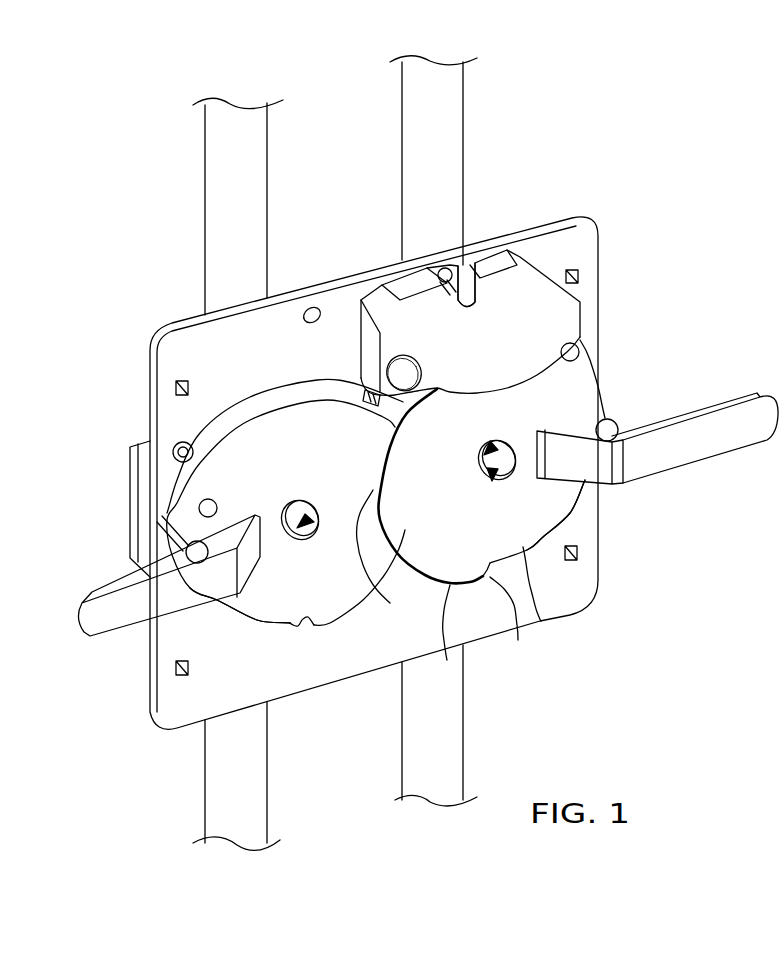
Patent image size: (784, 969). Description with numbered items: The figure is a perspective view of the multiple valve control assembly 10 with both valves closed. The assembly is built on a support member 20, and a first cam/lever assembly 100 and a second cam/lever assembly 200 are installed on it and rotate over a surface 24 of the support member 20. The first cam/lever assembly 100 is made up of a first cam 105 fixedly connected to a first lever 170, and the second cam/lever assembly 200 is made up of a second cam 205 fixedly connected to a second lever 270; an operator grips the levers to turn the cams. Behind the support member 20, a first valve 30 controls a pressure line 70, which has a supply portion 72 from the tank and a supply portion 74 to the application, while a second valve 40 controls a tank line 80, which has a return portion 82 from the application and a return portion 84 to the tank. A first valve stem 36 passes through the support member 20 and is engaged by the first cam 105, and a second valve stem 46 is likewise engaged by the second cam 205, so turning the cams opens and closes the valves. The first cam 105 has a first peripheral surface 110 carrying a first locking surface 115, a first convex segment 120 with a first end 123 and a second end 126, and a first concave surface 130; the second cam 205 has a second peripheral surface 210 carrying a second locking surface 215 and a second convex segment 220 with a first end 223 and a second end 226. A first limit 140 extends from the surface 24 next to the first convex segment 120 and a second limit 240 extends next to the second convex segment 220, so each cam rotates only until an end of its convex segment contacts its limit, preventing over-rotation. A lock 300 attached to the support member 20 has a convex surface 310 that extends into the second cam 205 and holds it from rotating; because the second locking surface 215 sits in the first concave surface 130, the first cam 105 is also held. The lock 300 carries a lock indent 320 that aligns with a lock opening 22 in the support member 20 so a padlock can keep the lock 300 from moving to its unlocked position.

The multiple valve control assembly 10 is at (560, 142).
The support member 20 is at (597, 583).
The lock opening 22 is at (440, 267).
The surface 24 is at (160, 655).
The first valve 30 is at (300, 540).
The first valve stem 36 is at (320, 520).
The second valve 40 is at (490, 480).
The second valve stem 46 is at (490, 448).
The pressure line 70 is at (205, 208).
The supply portion 72 is at (245, 120).
The supply portion 74 is at (237, 823).
The tank line 80 is at (463, 155).
The return portion 82 is at (450, 783).
The return portion 84 is at (440, 75).
The first cam/lever assembly 100 is at (268, 455).
The first cam 105 is at (230, 475).
The first peripheral surface 110 is at (362, 605).
The first locking surface 115 is at (265, 400).
The first convex segment 120 is at (265, 625).
The first end 123 is at (168, 518).
The second end 126 is at (300, 630).
The first concave surface 130 is at (365, 560).
The first limit 140 is at (185, 543).
The first lever 170 is at (120, 620).
The second cam/lever assembly 200 is at (595, 407).
The second cam 205 is at (558, 497).
The second peripheral surface 210 is at (447, 668).
The second locking surface 215 is at (390, 447).
The second convex segment 220 is at (530, 598).
The first end 223 is at (588, 383).
The second end 226 is at (517, 628).
The second limit 240 is at (610, 424).
The second lever 270 is at (737, 437).
The lock 300 is at (523, 293).
The convex surface 310 is at (507, 387).
The lock indent 320 is at (470, 275).